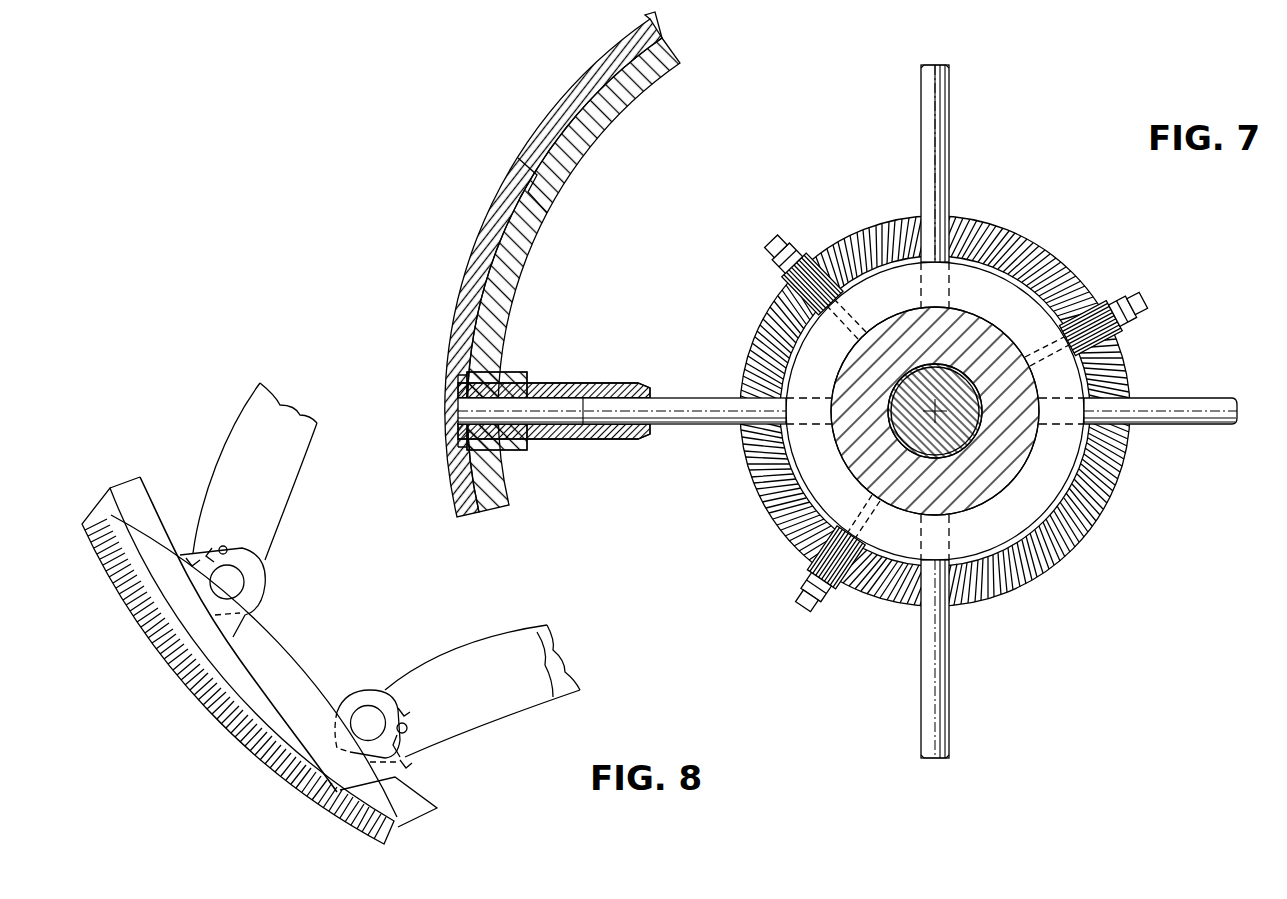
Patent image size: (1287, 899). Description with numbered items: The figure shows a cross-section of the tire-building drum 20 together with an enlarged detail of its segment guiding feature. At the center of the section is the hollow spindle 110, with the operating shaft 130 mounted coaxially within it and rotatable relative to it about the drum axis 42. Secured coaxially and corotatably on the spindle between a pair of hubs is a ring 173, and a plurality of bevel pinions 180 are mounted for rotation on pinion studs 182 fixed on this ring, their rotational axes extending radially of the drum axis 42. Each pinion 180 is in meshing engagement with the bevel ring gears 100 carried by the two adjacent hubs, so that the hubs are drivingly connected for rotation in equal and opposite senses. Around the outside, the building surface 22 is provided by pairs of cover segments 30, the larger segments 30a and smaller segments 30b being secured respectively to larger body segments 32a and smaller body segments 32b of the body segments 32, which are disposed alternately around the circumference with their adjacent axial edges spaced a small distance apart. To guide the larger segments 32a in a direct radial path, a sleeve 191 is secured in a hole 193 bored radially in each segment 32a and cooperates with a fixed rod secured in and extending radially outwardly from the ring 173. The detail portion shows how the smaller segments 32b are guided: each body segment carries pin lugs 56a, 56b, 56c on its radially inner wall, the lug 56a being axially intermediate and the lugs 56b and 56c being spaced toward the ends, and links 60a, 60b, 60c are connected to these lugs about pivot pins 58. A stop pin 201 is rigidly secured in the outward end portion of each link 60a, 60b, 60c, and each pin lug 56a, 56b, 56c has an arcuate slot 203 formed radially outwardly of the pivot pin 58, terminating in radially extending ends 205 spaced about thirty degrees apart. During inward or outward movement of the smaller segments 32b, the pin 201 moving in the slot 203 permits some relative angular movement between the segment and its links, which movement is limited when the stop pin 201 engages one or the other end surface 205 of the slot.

In FIG. 7, the drum 20 is at (492, 197).
In FIG. 8, the drum 20 is at (193, 697).
In FIG. 7, the building surface 22 is at (543, 120).
In FIG. 8, the building surface 22 is at (222, 722).
In FIG. 7, the cover segments 30 is at (457, 283).
In FIG. 8, the cover segments 30 is at (127, 610).
In FIG. 7, the larger cover segment 30a is at (463, 322).
In FIG. 8, the larger cover segment 30a is at (95, 520).
In FIG. 7, the smaller cover segment 30b is at (570, 92).
In FIG. 8, the smaller cover segment 30b is at (260, 753).
In FIG. 7, the body segments 32 is at (682, 50).
In FIG. 7, the larger body segment 32a is at (500, 303).
In FIG. 8, the larger body segment 32a is at (127, 493).
In FIG. 7, the smaller body segment 32b is at (603, 115).
In FIG. 8, the smaller body segment 32b is at (223, 668).
In FIG. 7, the drum axis 42 is at (942, 402).
In FIG. 8, the pin lug 56a is at (248, 602).
In FIG. 8, the pin lug 56b is at (335, 710).
In FIG. 8, the pin lug 56c is at (358, 695).
In FIG. 8, the pivot pin 58 is at (233, 582).
In FIG. 8, the link 60a is at (245, 425).
In FIG. 8, the link 60b is at (510, 672).
In FIG. 8, the link 60c is at (580, 692).
In FIG. 7, the bevel ring gear 100 is at (1033, 547).
In FIG. 7, the hollow spindle 110 is at (1017, 447).
In FIG. 7, the operating shaft 130 is at (972, 450).
In FIG. 7, the ring 173 is at (808, 475).
In FIG. 7, the bevel pinion 180 is at (815, 268).
In FIG. 7, the pinion stud 182 is at (785, 262).
In FIG. 7, the sleeve 191 is at (585, 385).
In FIG. 7, the hole 193 is at (493, 433).
In FIG. 8, the stop pin 201 is at (230, 548).
In FIG. 8, the arcuate slot 203 is at (222, 547).
In FIG. 8, the slot end 205 is at (192, 562).